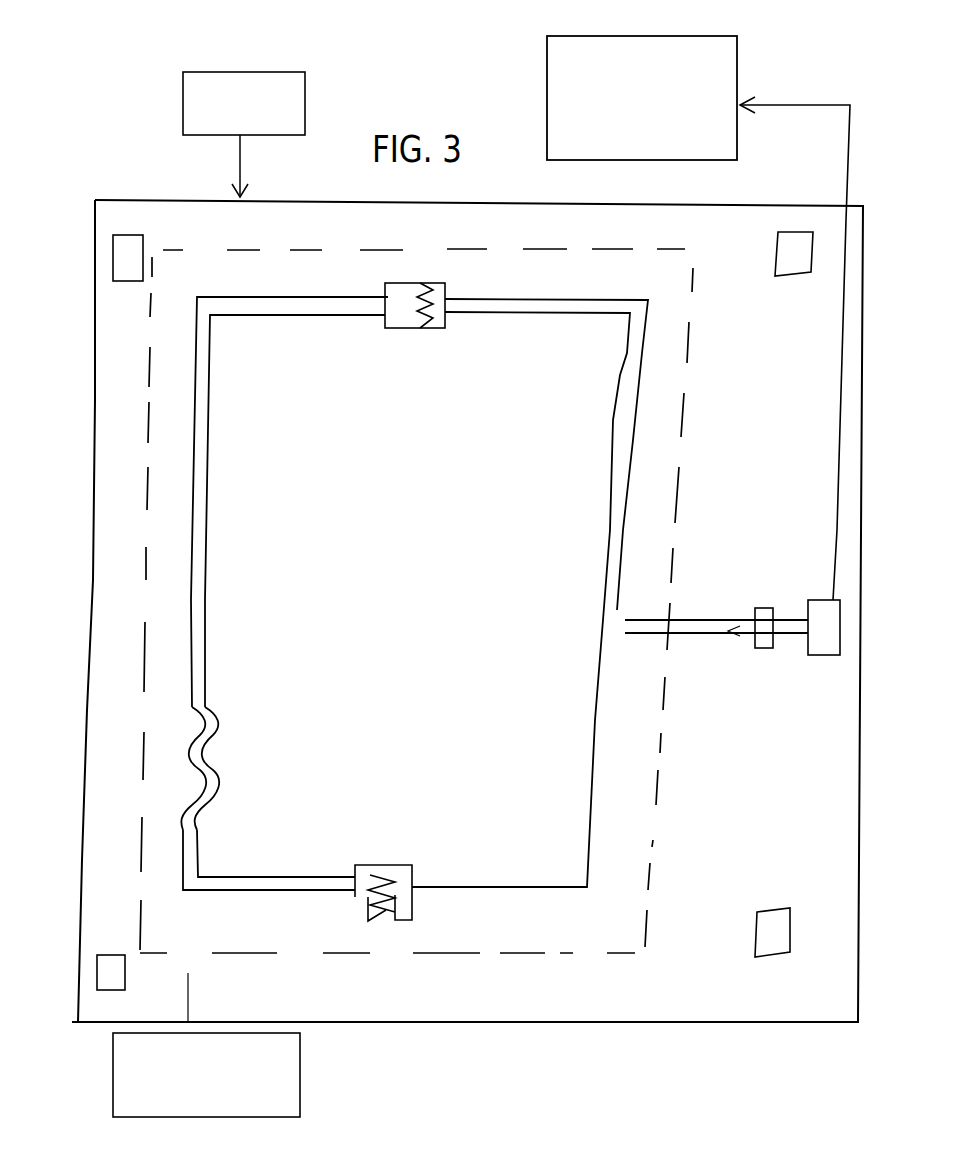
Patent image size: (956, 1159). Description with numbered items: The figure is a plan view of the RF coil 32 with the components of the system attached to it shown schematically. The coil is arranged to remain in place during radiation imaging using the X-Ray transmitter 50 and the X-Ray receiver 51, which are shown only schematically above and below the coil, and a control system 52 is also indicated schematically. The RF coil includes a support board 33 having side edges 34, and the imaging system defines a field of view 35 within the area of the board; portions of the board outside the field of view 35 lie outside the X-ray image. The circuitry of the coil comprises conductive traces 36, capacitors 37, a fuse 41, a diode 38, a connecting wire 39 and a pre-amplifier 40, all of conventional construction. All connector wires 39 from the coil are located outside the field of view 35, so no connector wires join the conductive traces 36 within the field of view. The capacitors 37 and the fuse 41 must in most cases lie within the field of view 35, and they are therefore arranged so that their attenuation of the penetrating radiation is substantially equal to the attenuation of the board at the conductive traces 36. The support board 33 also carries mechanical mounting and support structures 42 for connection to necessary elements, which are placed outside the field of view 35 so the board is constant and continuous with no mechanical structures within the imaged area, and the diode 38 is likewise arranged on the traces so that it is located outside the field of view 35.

The RF coil 32 is at (110, 663).
The support board 33 is at (107, 560).
The side edges 34 is at (183, 200).
The field of view 35 is at (147, 752).
The conductive traces 36 is at (198, 628).
The capacitors 37 is at (437, 330).
The diode 38 is at (763, 608).
The connecting wire 39 is at (785, 634).
The pre-amplifier 40 is at (822, 637).
The fuse 41 is at (207, 720).
The mechanical mounting and support structures 42 is at (113, 252).
The X-Ray transmitter 50 is at (257, 72).
The X-Ray receiver 51 is at (242, 1033).
The MRI control system 52 is at (545, 72).